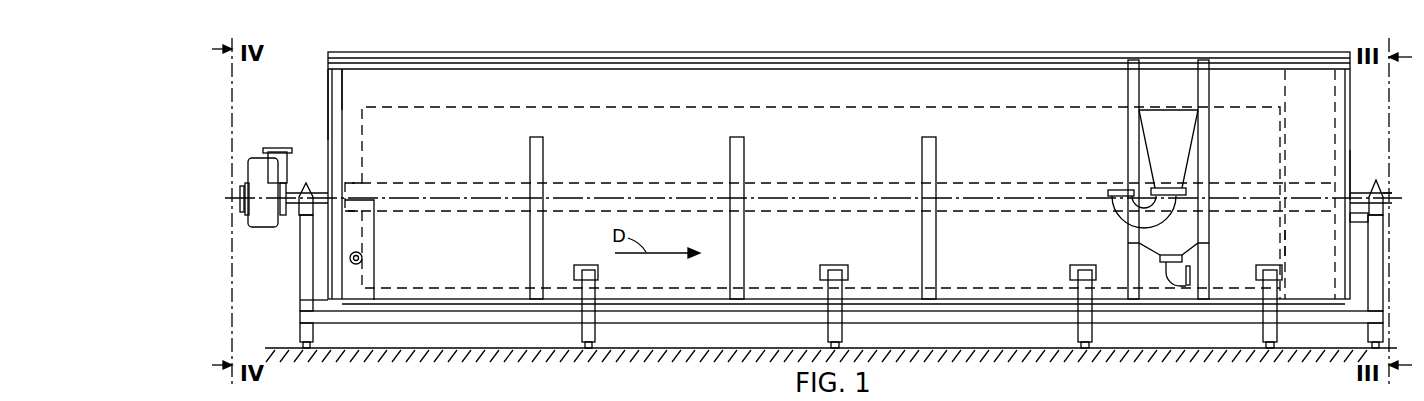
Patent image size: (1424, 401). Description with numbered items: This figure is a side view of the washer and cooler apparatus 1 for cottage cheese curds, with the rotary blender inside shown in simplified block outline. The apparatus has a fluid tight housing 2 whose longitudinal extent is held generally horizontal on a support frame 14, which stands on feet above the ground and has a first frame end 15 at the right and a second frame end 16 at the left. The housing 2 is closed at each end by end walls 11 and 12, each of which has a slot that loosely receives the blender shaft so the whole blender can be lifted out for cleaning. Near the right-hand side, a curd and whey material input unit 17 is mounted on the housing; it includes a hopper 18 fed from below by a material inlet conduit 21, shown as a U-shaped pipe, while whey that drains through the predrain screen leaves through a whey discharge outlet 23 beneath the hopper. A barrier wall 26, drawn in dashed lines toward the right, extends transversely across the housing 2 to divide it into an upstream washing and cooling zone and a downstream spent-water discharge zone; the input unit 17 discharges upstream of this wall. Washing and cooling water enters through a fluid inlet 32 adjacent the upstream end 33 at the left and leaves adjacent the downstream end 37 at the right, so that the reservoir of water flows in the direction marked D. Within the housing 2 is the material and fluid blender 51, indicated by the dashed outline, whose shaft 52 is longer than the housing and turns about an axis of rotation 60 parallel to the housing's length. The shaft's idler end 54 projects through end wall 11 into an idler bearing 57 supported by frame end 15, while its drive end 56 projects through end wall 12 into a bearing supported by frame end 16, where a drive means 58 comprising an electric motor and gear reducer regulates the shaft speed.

The washer and cooler apparatus 1 is at (436, 48).
The housing 2 is at (360, 90).
The end wall 11 is at (1350, 104).
The end wall 12 is at (328, 119).
The support frame 14 is at (300, 316).
The frame end 15 is at (1383, 282).
The frame end 16 is at (300, 291).
The material input unit 17 is at (1146, 136).
The hopper 18 is at (1204, 157).
The material inlet conduit 21 is at (1130, 216).
The whey discharge outlet 23 is at (1190, 280).
The barrier wall 26 is at (1287, 243).
The fluid inlet 32 is at (364, 258).
The upstream end 33 is at (320, 270).
The downstream end 37 is at (1356, 168).
The material and fluid blender 51 is at (774, 113).
The shaft 52 is at (846, 185).
The idler end 54 is at (1382, 188).
The drive end 56 is at (238, 188).
The idler bearing 57 is at (1368, 193).
The drive means 58 is at (262, 219).
The axis of rotation 60 is at (678, 192).